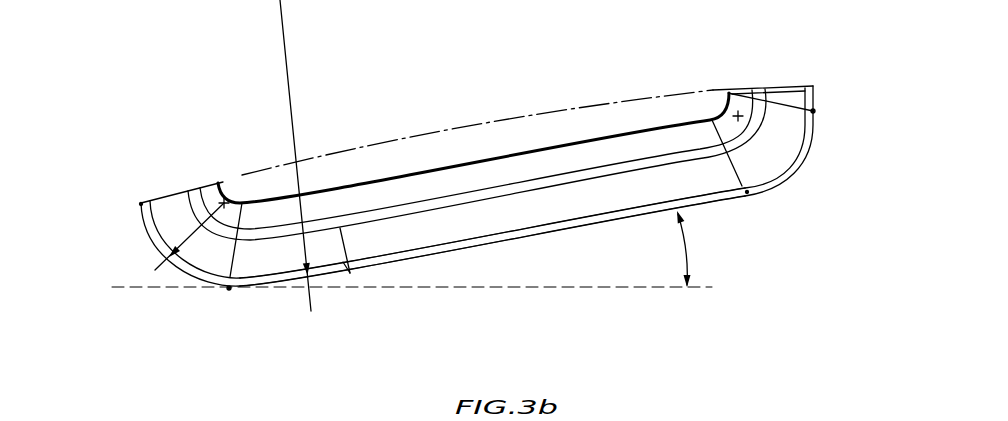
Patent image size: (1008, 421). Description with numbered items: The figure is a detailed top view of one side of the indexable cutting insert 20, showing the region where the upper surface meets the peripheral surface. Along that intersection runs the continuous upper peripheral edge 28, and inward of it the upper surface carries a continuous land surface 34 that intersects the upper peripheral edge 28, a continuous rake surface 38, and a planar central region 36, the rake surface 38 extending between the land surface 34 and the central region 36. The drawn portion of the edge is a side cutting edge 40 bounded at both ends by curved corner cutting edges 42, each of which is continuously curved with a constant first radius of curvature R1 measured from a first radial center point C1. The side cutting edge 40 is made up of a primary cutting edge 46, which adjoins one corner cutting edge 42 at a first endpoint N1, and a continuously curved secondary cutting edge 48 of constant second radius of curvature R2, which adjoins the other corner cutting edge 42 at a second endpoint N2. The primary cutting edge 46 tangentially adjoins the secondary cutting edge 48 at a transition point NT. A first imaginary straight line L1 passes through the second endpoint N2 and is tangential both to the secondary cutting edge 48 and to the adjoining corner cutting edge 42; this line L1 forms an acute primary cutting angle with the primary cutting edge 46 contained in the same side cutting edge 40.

The indexable cutting insert 20 is at (477, 156).
The upper peripheral edge 28 is at (477, 219).
The land surface 34 is at (634, 207).
The planar central region 36 is at (488, 140).
The rake surface 38 is at (473, 120).
The side cutting edge 40 is at (492, 278).
The corner cutting edge 42 is at (179, 271).
The primary cutting edge 46 is at (516, 240).
The secondary cutting edge 48 is at (330, 278).
The first radial center point C1 is at (226, 201).
The first radius of curvature R1 is at (175, 242).
The second radius of curvature R2 is at (302, 170).
The first endpoint N1 is at (141, 205).
The second endpoint N2 is at (229, 288).
The transition point NT is at (350, 273).
The first imaginary straight line L1 is at (414, 289).